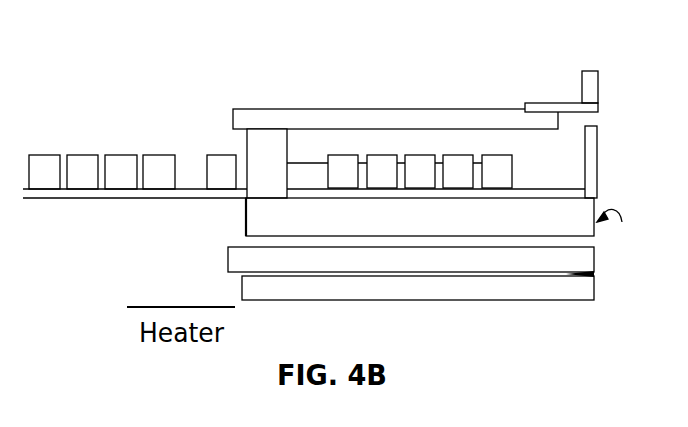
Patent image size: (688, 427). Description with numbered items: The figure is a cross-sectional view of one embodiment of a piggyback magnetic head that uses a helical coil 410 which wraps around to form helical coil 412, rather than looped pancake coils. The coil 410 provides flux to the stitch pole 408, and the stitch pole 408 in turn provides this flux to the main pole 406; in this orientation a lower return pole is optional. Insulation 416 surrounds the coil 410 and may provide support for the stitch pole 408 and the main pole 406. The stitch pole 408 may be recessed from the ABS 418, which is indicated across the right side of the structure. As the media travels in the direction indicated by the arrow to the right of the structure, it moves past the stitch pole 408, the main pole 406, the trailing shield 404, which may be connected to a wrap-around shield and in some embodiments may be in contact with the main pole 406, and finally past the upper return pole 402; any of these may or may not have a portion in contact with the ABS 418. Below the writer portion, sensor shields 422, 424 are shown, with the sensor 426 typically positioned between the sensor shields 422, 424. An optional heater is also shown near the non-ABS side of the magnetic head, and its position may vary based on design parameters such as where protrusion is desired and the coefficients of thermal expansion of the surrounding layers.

The upper return pole 402 is at (600, 83).
The trailing shield 404 is at (597, 168).
The main pole 406 is at (565, 103).
The stitch pole 408 is at (422, 108).
The helical coil 410 is at (492, 155).
The helical coil 412 is at (37, 154).
The insulation 416 is at (472, 230).
The ABS 418 is at (623, 227).
The sensor shield 422 is at (228, 262).
The sensor shield 424 is at (242, 282).
The sensor 426 is at (592, 266).